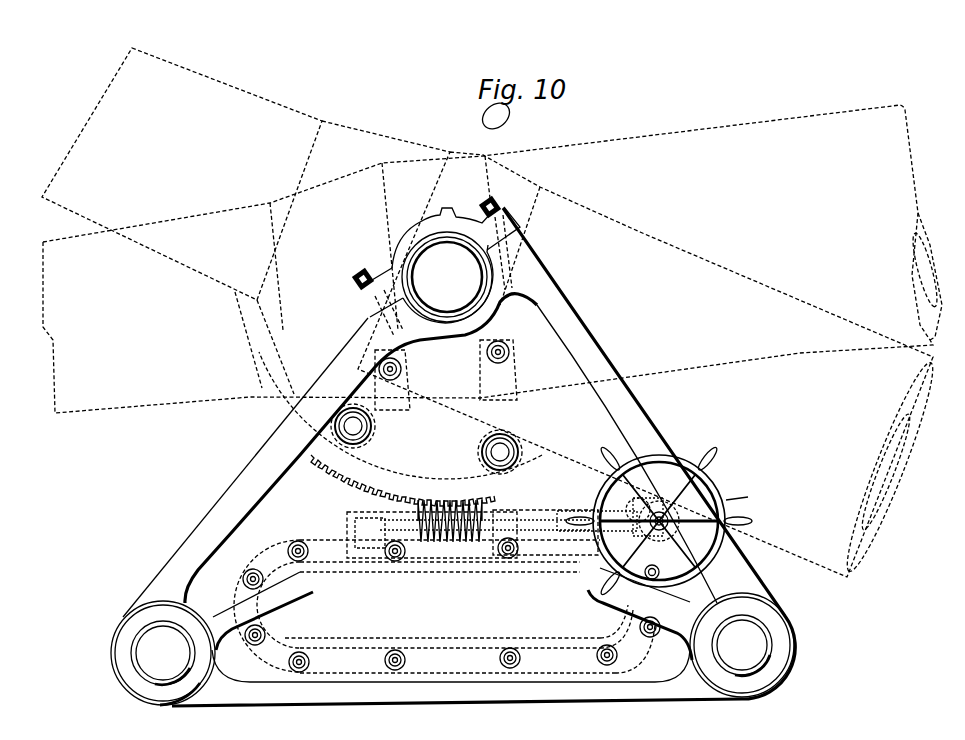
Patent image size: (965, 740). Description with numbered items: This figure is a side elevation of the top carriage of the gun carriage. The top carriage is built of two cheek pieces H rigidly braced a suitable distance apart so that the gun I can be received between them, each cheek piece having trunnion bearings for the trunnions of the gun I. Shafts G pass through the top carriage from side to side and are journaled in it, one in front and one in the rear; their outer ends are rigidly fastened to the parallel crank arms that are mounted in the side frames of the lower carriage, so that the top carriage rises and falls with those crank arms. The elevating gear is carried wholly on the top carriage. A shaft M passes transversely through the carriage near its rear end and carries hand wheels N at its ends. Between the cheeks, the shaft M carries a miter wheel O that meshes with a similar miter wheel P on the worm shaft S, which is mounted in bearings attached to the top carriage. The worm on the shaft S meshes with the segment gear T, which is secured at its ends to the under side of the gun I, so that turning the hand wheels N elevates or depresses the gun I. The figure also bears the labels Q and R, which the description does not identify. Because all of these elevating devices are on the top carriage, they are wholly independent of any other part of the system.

The shafts G is at (452, 649).
The cheek pieces H is at (650, 440).
The gun I is at (595, 147).
The shaft M is at (744, 499).
The hand wheels N is at (710, 480).
The miter wheel O is at (659, 535).
The miter wheel P is at (631, 504).
The bracket Q is at (560, 514).
The rack bar R is at (347, 527).
The worm shaft S is at (445, 542).
The segment gear T is at (348, 482).